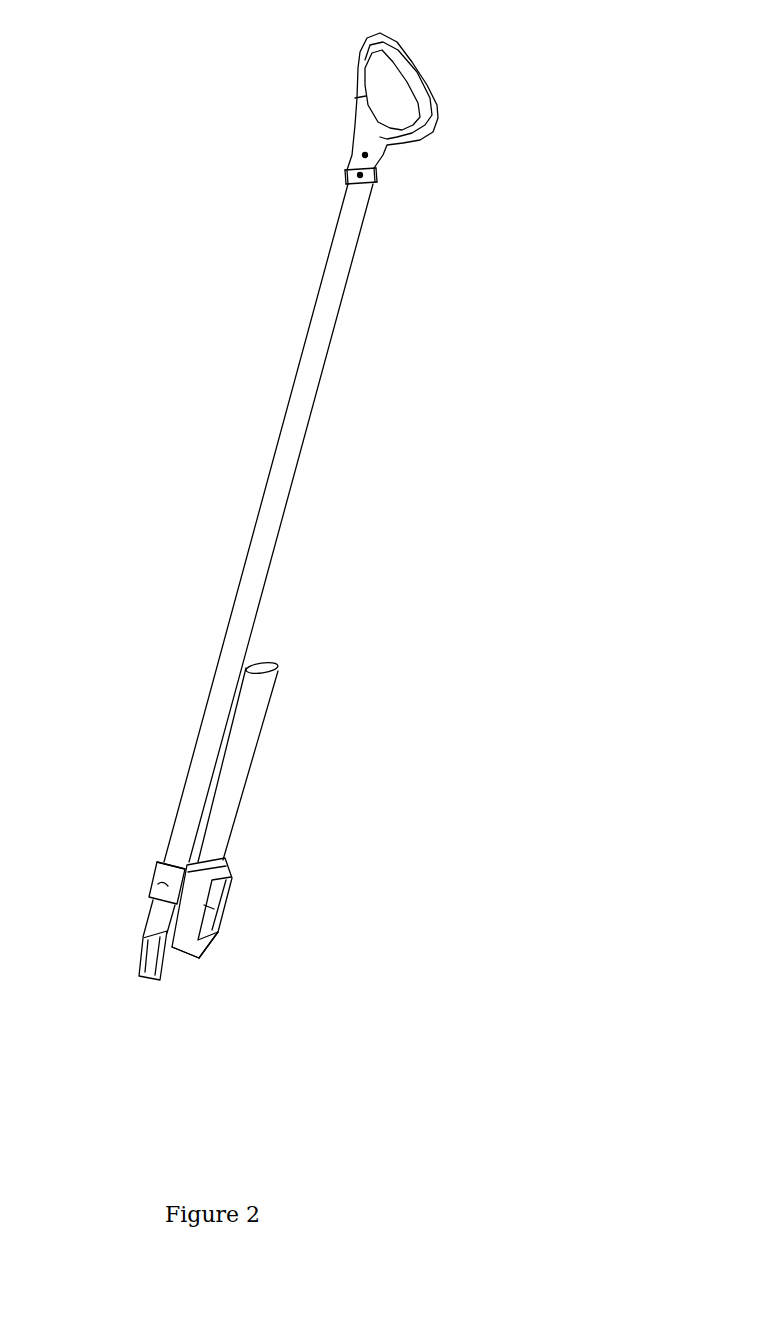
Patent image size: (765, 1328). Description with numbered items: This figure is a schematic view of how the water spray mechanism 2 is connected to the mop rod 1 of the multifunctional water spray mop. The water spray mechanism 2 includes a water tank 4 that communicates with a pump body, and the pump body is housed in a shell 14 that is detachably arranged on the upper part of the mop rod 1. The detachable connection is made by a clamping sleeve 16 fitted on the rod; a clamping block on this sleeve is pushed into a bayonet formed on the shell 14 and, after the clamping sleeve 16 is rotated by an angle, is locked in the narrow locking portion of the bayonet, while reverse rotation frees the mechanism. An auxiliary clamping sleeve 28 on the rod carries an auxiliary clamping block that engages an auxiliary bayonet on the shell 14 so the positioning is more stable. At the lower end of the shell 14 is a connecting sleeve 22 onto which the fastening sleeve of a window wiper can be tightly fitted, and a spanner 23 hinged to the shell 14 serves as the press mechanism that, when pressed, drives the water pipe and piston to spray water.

The mop rod 1 is at (256, 506).
The water spray mechanism 2 is at (265, 887).
The water tank 4 is at (245, 742).
The shell 14 is at (207, 930).
The clamping sleeve 16 is at (120, 881).
The connecting sleeve 22 is at (211, 990).
The spanner 23 is at (228, 914).
The auxiliary clamping sleeve 28 is at (138, 847).